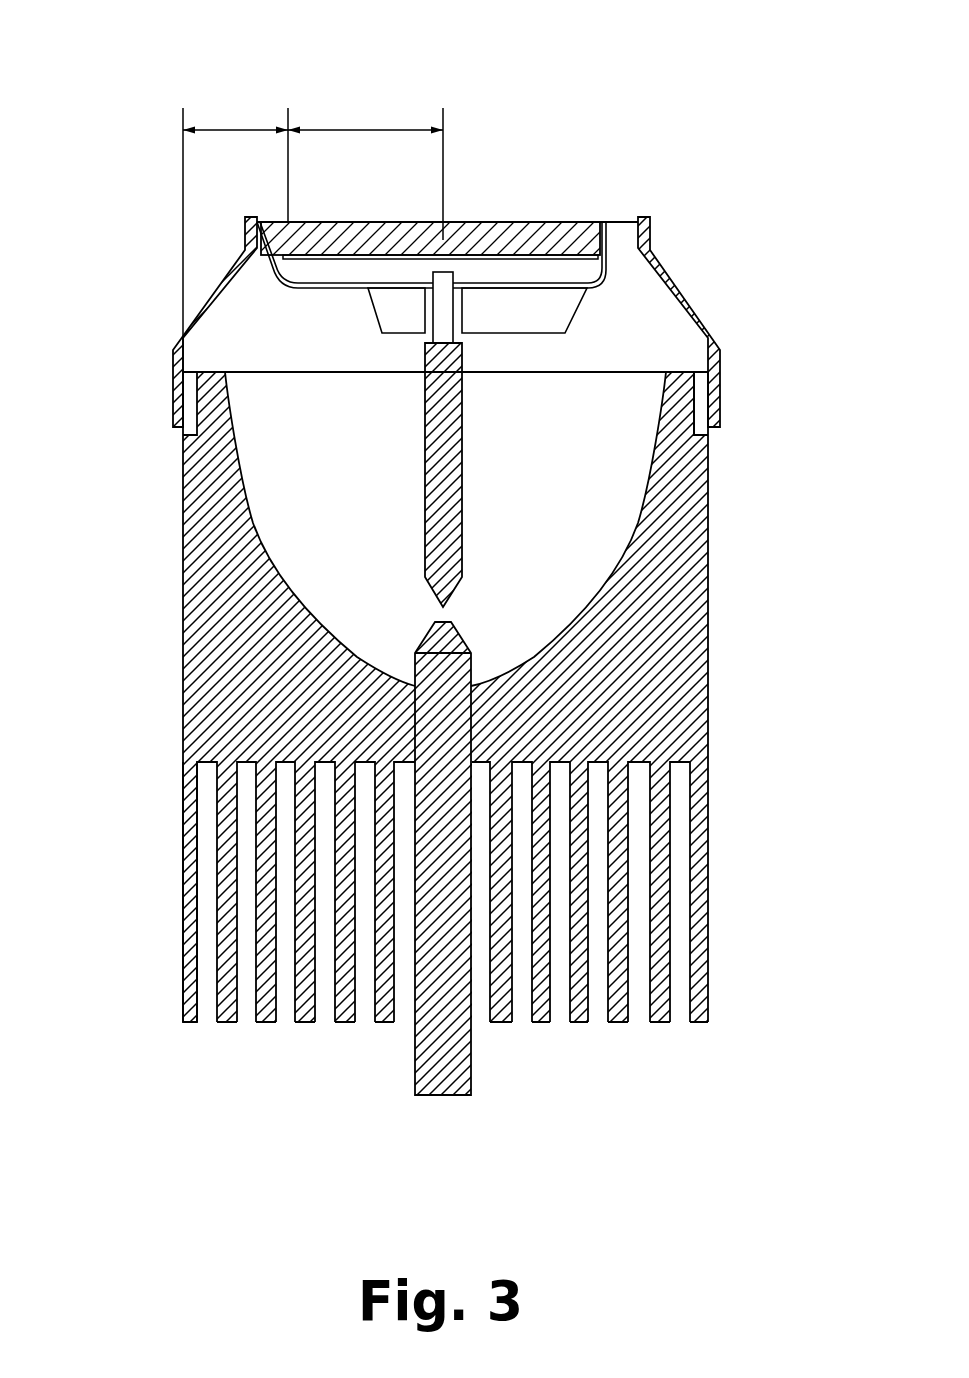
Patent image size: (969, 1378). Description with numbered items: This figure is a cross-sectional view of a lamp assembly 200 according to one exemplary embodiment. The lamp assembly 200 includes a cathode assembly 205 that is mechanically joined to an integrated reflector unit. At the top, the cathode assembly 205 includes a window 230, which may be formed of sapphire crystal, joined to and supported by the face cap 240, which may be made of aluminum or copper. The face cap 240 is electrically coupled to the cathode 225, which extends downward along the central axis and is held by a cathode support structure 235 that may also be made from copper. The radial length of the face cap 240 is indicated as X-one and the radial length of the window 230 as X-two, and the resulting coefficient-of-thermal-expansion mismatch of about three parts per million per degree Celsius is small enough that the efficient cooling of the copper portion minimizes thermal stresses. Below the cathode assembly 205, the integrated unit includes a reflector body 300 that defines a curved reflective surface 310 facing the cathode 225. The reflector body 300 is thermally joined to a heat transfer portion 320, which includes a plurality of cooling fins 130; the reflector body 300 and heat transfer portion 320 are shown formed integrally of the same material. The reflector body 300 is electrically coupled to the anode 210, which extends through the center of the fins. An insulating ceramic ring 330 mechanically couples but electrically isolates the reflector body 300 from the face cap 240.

The cooling fins 130 is at (183, 982).
The lamp assembly 200 is at (170, 50).
The cathode assembly 205 is at (143, 354).
The anode 210 is at (414, 1018).
The cathode 225 is at (462, 470).
The window 230 is at (565, 222).
The cathode support structure 235 is at (575, 316).
The face cap 240 is at (667, 273).
The reflector body 300 is at (650, 650).
The reflective surface 310 is at (622, 567).
The heat transfer portion 320 is at (745, 928).
The ceramic ring 330 is at (702, 437).